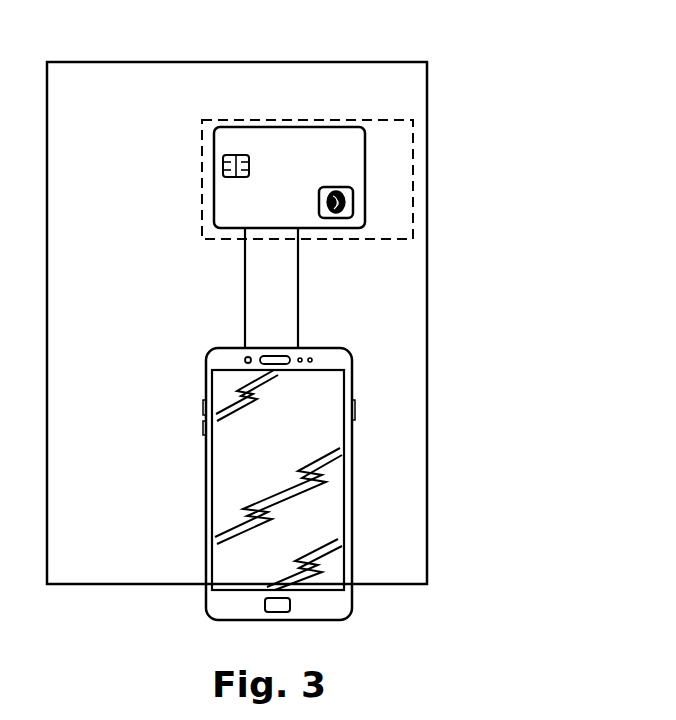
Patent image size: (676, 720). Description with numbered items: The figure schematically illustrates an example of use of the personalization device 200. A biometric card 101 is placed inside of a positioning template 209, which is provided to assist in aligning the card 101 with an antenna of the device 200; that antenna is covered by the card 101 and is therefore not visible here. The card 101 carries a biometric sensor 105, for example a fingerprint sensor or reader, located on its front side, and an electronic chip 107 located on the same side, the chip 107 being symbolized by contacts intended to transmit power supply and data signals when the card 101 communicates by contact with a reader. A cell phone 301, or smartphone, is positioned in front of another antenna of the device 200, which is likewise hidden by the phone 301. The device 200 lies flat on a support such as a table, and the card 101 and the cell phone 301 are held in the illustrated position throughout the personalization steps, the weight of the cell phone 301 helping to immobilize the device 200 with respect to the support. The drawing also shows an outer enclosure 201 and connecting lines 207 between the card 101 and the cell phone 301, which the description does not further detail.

The device 200 is at (458, 76).
The housing / enclosure 201 is at (428, 377).
The positioning template 209 is at (413, 152).
The biometric card 101 is at (366, 198).
The biometric sensor 105 is at (330, 187).
The electronic chip 107 is at (236, 177).
The connection wires 207 is at (298, 263).
The cell phone 301 is at (206, 483).